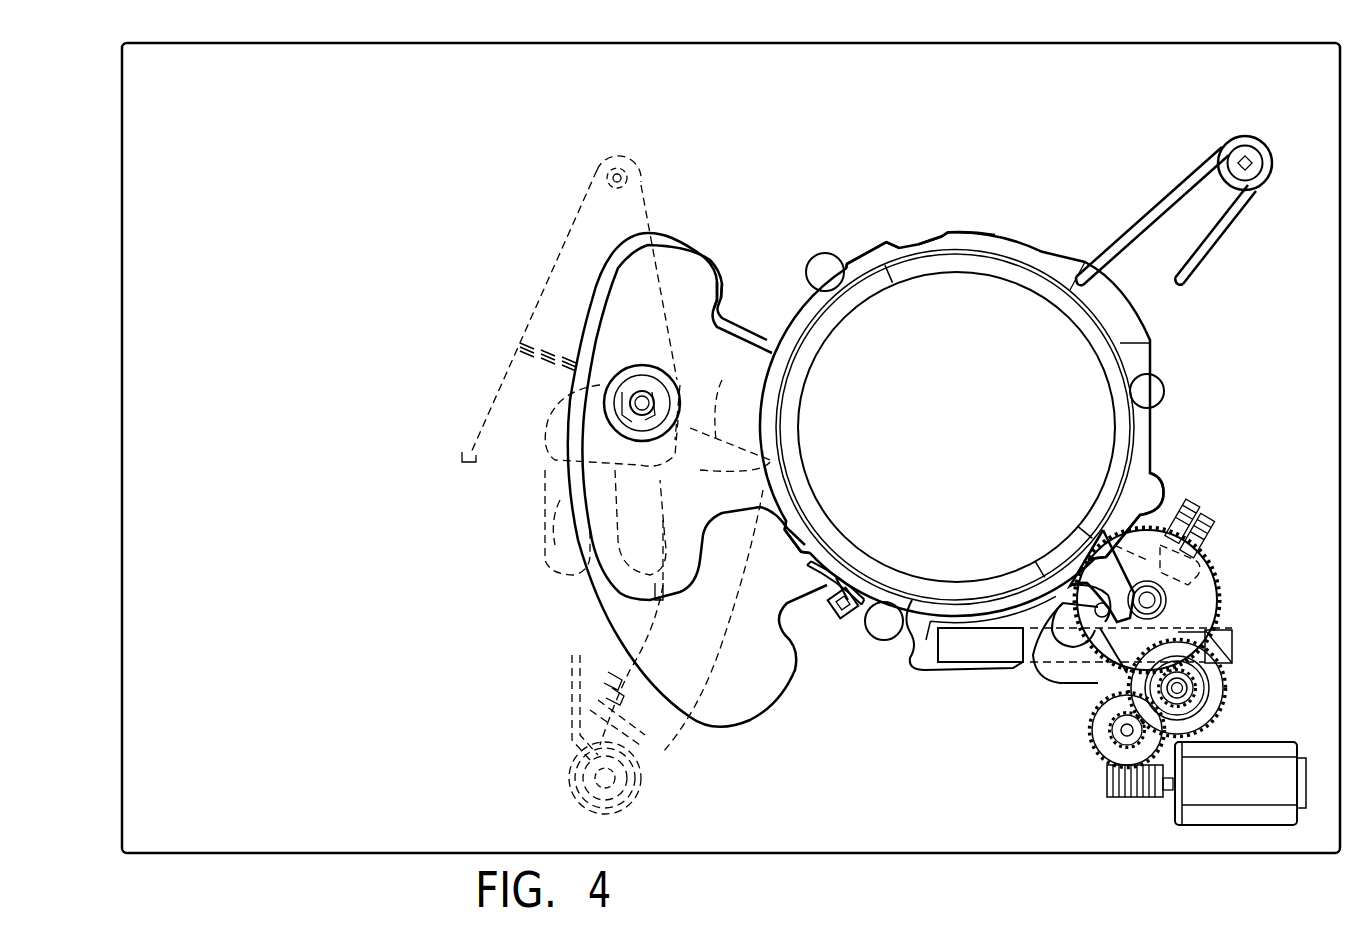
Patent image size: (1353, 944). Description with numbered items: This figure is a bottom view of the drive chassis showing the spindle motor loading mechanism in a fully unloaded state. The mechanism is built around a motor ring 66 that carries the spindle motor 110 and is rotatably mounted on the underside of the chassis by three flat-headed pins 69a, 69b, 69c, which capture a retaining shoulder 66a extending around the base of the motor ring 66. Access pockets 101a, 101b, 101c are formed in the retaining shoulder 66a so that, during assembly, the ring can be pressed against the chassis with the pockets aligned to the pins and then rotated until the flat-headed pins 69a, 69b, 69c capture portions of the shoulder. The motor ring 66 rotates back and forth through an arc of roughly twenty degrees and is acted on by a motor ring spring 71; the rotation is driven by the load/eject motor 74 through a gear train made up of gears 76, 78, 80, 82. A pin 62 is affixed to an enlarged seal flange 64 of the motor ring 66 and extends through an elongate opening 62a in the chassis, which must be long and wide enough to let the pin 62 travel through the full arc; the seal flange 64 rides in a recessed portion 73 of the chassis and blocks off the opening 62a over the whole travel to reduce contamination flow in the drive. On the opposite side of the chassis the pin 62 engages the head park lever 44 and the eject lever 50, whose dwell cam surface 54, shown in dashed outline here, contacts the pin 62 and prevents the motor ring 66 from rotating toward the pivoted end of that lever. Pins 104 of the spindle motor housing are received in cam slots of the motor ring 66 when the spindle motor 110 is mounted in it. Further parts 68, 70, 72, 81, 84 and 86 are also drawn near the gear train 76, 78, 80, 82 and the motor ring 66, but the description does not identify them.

The head park lever 44 is at (636, 200).
The eject lever 50 is at (658, 745).
The dwell cam surface 54 is at (718, 382).
The pin 62 is at (652, 368).
The elongate opening 62a is at (712, 288).
The seal flange 64 is at (667, 268).
The motor ring 66 is at (1040, 250).
The retaining shoulder 66a is at (957, 240).
The block 68 is at (975, 675).
The flat-headed pin 69a is at (827, 253).
The flat-headed pin 69b is at (888, 640).
The flat-headed pin 69c is at (1165, 380).
The lever 70 is at (1090, 658).
The motor ring spring 71 is at (1148, 212).
The pawl 72 is at (1063, 570).
The recessed portion 73 is at (722, 730).
The load/eject motor 74 is at (1265, 742).
The gear train 76 is at (1122, 800).
The gear train 78 is at (1093, 742).
The gear train 80 is at (1225, 700).
The stop 81 is at (1235, 650).
The gear train 82 is at (1217, 608).
The switch 84 is at (1215, 545).
The hook 86 is at (1062, 578).
The access pocket 101a is at (905, 245).
The access pocket 101b is at (1148, 478).
The access pocket 101c is at (797, 548).
The pin 104 is at (838, 575).
The spindle motor 110 is at (998, 302).